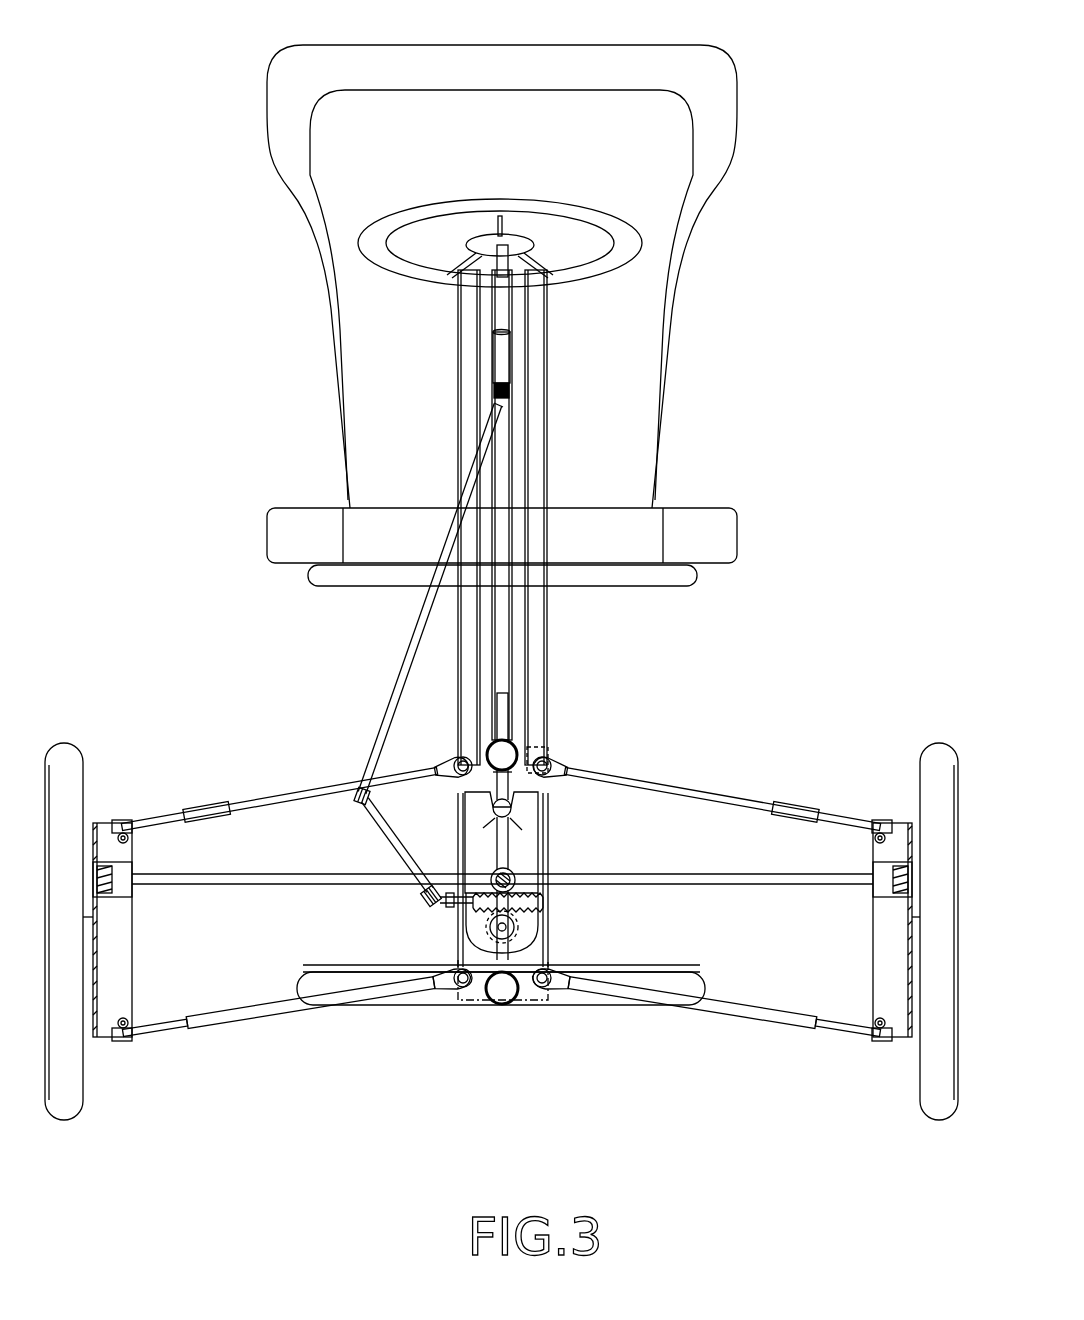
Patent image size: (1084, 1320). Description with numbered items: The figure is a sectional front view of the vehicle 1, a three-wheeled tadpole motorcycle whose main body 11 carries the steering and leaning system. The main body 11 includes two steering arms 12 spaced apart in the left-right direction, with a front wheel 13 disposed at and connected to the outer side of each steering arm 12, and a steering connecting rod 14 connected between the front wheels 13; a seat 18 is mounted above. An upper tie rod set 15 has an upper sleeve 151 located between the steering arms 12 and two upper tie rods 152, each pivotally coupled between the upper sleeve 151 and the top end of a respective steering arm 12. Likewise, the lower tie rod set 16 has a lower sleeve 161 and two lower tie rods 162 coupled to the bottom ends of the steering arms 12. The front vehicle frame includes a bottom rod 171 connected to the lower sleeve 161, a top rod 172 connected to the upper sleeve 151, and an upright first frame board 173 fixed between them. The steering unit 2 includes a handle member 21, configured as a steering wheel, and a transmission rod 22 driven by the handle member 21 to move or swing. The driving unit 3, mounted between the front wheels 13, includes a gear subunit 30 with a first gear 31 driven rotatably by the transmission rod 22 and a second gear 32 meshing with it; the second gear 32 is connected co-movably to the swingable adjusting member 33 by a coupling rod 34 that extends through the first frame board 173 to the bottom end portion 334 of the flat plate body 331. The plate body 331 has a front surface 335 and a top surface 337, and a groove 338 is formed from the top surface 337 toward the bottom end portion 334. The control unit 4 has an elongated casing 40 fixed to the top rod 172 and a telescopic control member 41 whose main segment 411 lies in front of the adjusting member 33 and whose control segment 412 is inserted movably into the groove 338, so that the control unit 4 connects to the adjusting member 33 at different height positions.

The vehicle 1 is at (222, 178).
The steering unit 2 is at (634, 284).
The handle member 21 is at (625, 240).
The seat 18 is at (642, 385).
The transmission rod 22 is at (448, 503).
The control unit 4 is at (510, 660).
The elongated casing 40 is at (508, 695).
The control member 41 is at (636, 650).
The main segment 411 is at (514, 756).
The control segment 412 is at (512, 793).
The upper tie rod set 15 is at (182, 778).
The upper sleeve 151 is at (485, 757).
The upper tie rods 152 is at (230, 805).
The top rod 172 is at (487, 747).
The front wheels 13 is at (60, 837).
The steering arms 12 is at (112, 1002).
The steering connecting rod 14 is at (188, 880).
The main body 11 is at (407, 1018).
The lower tie rod set 16 is at (218, 1048).
The lower sleeve 161 is at (501, 1005).
The lower tie rods 162 is at (298, 1008).
The bottom rod 171 is at (489, 997).
The first frame board 173 is at (465, 948).
The driving unit 3 is at (580, 945).
The gear subunit 30 is at (762, 893).
The first gear 31 is at (548, 903).
The second gear 32 is at (520, 927).
The adjusting member 33 is at (455, 813).
The plate body 331 is at (542, 860).
The bottom end portion 334 is at (527, 945).
The front surface 335 is at (525, 845).
The top surface 337 is at (535, 790).
The groove 338 is at (530, 813).
The coupling rod 34 is at (515, 955).